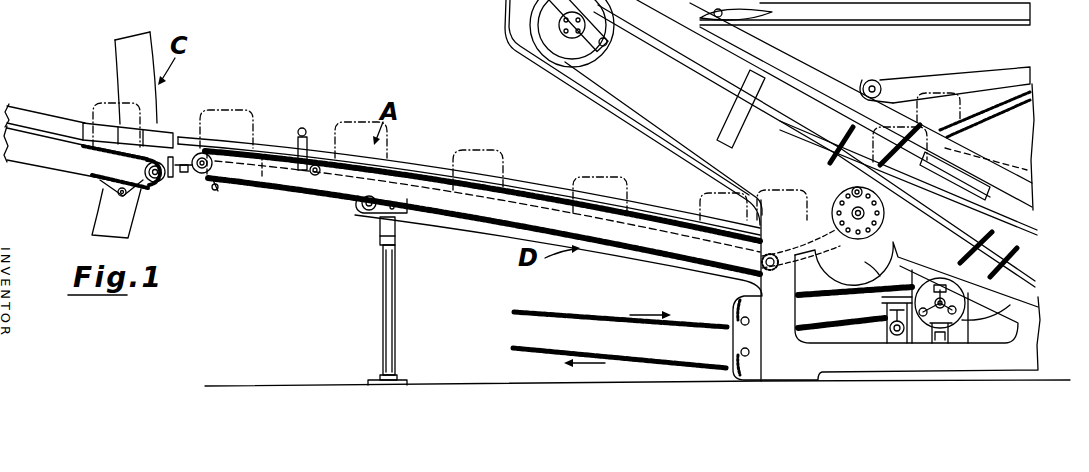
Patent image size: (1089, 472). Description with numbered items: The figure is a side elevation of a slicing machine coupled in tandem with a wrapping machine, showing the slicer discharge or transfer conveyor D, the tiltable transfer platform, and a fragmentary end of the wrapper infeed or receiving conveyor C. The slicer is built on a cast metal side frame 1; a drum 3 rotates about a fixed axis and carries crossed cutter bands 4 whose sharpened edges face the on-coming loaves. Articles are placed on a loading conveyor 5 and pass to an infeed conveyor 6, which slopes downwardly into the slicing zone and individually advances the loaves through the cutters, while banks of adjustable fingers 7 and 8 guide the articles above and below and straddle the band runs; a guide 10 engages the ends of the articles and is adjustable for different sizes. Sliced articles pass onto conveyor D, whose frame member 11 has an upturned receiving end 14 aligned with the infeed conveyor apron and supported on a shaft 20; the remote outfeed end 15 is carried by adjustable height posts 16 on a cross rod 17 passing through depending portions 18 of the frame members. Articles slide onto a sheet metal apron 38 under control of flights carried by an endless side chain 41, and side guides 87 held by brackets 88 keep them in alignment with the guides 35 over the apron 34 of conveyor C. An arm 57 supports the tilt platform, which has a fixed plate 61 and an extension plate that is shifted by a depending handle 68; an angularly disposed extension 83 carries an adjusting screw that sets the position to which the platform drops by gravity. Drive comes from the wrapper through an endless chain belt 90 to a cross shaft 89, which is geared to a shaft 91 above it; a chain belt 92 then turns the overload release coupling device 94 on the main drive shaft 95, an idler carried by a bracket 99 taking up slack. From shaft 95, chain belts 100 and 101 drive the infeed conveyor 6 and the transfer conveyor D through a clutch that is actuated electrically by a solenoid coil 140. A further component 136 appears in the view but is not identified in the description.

The side frame 1 is at (618, 123).
The drum 3 is at (593, 53).
The cutter bands 4 is at (690, 108).
The loading conveyor 5 is at (852, 14).
The infeed conveyor 6 is at (1023, 117).
The bank of adjustable fingers 7 is at (813, 160).
The bank of adjustable fingers 8 is at (925, 207).
The guide 10 is at (987, 92).
The frame member 11 is at (503, 213).
The conveyor receiving end 14 is at (797, 280).
The outfeed end 15 is at (275, 172).
The adjustable height post 16 is at (383, 318).
The cross rod 17 is at (403, 213).
The depending portion 18 is at (365, 218).
The shaft 20 is at (857, 185).
The supporting apron 34 is at (100, 178).
The side guides 35 is at (33, 113).
The sheet metal apron 38 is at (532, 190).
The side chain 41 is at (293, 192).
The arm 57 is at (184, 180).
The fixed plate 61 is at (180, 127).
The depending handle 68 is at (173, 188).
The angularly disposed extension 83 is at (220, 190).
The side guides 87 is at (428, 163).
The brackets 88 is at (305, 137).
The cross shaft 89 is at (750, 355).
The endless chain belt 90 is at (575, 313).
The shaft 91 is at (743, 318).
The endless chain belt 92 is at (901, 311).
The coupling device 94 is at (965, 313).
The main drive shaft 95 is at (990, 305).
The bracket 99 is at (883, 333).
The endless chain belt 100 is at (1030, 251).
The endless chain belt 101 is at (887, 220).
The bracket 136 is at (943, 340).
The solenoid coil 140 is at (872, 278).